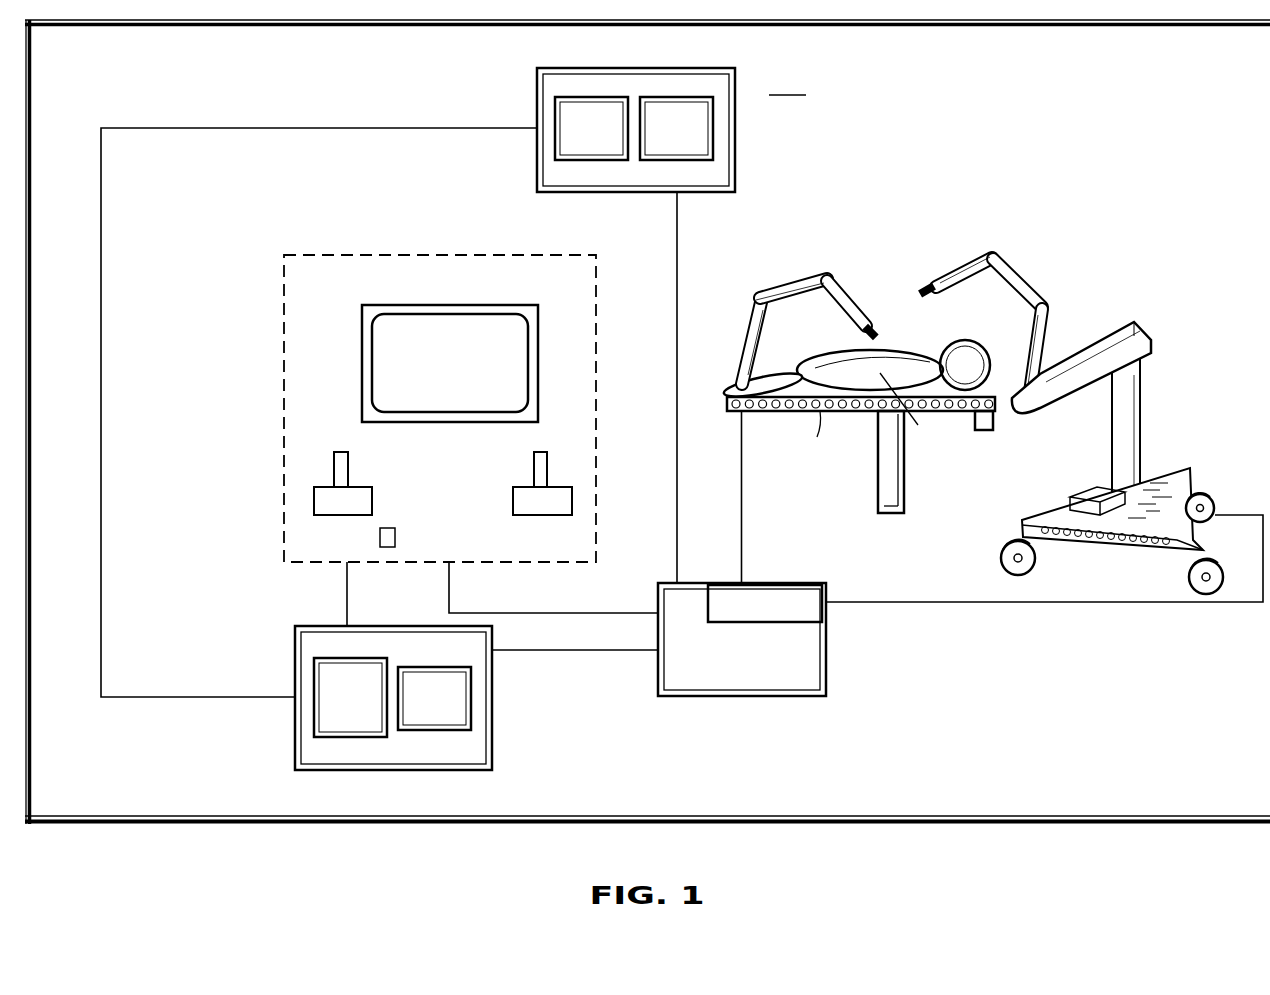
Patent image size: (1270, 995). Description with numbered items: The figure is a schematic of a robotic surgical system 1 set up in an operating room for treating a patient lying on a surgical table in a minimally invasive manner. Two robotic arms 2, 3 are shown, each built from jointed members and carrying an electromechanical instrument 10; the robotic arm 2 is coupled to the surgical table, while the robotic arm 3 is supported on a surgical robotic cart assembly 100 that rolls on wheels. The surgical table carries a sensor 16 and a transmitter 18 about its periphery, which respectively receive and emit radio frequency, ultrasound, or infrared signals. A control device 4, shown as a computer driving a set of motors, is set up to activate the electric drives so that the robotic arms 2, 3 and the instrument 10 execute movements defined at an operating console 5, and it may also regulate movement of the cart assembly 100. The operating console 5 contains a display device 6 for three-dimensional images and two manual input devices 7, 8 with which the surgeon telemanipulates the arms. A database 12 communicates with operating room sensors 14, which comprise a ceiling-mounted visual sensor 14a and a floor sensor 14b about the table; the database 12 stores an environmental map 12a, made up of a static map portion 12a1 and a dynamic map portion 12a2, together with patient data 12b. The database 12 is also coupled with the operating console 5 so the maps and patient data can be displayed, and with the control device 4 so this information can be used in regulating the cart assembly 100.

The robotic surgical system 1 is at (967, 617).
The robotic arm 2 is at (746, 270).
The robotic arm 3 is at (1025, 279).
The control device 4 is at (734, 656).
The operating console 5 is at (368, 246).
The display device 6 is at (462, 368).
The manual input device 7 is at (327, 503).
The manual input device 8 is at (542, 503).
The electromechanical instrument 10 is at (878, 338).
The database 12 is at (404, 713).
The environmental map 12a is at (314, 712).
The static map portion 12a1 is at (350, 684).
The dynamic map portion 12a2 is at (350, 711).
The patient data 12b is at (434, 698).
The operating room sensor 14 is at (671, 134).
The visual sensor 14a is at (591, 128).
The floor sensor 14b is at (676, 128).
The sensor 16 is at (861, 457).
The transmitter 18 is at (983, 420).
The surgical robotic cart assembly 100 is at (1153, 320).